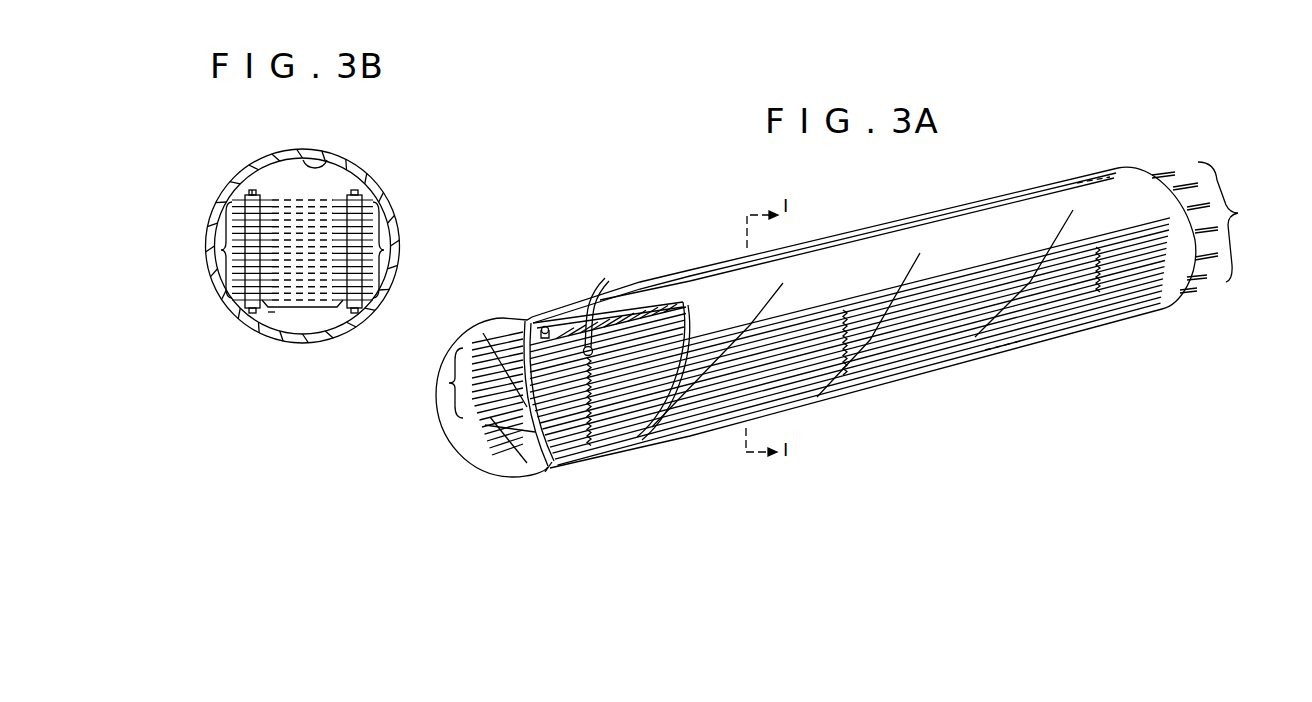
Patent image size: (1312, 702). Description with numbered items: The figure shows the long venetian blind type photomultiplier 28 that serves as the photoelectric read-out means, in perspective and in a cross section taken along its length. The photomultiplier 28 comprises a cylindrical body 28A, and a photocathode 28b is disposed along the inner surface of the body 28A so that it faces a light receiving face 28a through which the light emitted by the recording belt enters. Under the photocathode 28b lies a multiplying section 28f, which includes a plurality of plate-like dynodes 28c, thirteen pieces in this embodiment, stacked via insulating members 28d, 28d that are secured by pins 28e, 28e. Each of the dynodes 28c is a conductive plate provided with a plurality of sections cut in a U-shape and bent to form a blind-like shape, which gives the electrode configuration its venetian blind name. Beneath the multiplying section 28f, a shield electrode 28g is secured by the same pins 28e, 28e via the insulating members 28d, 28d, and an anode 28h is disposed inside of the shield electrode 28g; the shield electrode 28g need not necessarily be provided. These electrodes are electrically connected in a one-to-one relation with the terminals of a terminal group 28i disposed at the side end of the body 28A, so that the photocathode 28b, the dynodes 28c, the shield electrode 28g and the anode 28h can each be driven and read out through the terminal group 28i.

In FIG. 3B, the photomultiplier 28 is at (376, 155).
In FIG. 3A, the photomultiplier 28 is at (983, 199).
In FIG. 3B, the light receiving face 28a is at (287, 157).
In FIG. 3A, the light receiving face 28a is at (872, 258).
In FIG. 3B, the photocathode 28b is at (327, 163).
In FIG. 3B, the plate-like dynodes 28c is at (400, 247).
In FIG. 3A, the plate-like dynodes 28c is at (614, 350).
In FIG. 3B, the insulating members 28d is at (245, 193).
In FIG. 3A, the insulating members 28d is at (550, 328).
In FIG. 3B, the pins 28e is at (252, 194).
In FIG. 3A, the pins 28e is at (544, 326).
In FIG. 3B, the multiplying section 28f is at (222, 250).
In FIG. 3A, the multiplying section 28f is at (447, 387).
In FIG. 3B, the shield electrode 28g is at (296, 310).
In FIG. 3A, the shield electrode 28g is at (545, 462).
In FIG. 3B, the anode 28h is at (270, 309).
In FIG. 3A, the anode 28h is at (497, 443).
In FIG. 3A, the terminal group 28i is at (1215, 227).
In FIG. 3B, the cylindrical body 28A is at (262, 310).
In FIG. 3A, the cylindrical body 28A is at (973, 366).